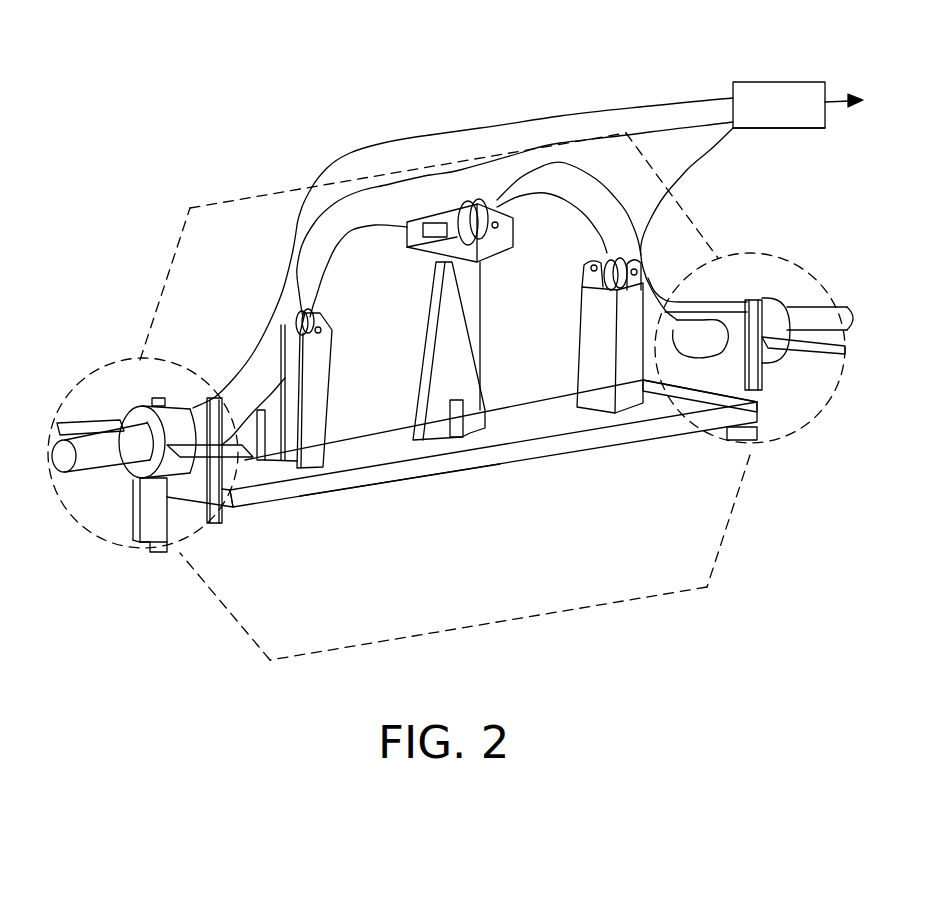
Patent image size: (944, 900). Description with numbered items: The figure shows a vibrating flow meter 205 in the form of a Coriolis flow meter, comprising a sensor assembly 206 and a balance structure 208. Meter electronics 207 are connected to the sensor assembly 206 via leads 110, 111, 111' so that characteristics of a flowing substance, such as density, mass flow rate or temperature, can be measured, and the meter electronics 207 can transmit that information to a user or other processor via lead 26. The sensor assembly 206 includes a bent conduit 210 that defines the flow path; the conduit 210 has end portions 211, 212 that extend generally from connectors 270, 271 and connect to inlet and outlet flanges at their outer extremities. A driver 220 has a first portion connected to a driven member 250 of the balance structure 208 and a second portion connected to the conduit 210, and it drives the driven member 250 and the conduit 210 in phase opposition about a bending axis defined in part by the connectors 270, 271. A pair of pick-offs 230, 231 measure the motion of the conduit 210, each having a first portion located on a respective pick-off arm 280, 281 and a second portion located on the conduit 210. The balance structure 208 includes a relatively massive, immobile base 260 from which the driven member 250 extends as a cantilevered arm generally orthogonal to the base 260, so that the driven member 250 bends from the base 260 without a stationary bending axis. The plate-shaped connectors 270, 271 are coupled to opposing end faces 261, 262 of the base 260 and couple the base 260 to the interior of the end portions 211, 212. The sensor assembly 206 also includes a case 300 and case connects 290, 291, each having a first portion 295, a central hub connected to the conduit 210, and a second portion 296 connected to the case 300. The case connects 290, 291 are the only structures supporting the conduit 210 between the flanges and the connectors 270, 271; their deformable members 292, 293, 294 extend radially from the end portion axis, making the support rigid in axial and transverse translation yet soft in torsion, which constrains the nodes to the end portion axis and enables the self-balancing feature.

The lead 26 is at (844, 117).
The lead 110 is at (515, 174).
The lead 111 is at (581, 89).
The lead 111' is at (719, 224).
The vibrating flow meter 205 is at (754, 68).
The sensor assembly 206 is at (446, 385).
The meter electronics 207 is at (786, 153).
The balance structure 208 is at (400, 546).
The conduit 210 is at (311, 277).
The end portion 211 is at (101, 531).
The end portion 212 is at (807, 274).
The driver 220 is at (437, 252).
The pick-off 230 is at (275, 288).
The pick-off 231 is at (586, 253).
The driven member 250 is at (481, 390).
The base 260 is at (462, 478).
The end face 261 is at (274, 524).
The end face 262 is at (697, 267).
The connector 270 is at (202, 427).
The connector 271 is at (700, 450).
The pick-off arm 280 is at (323, 390).
The pick-off arm 281 is at (568, 336).
The case connect 290 is at (135, 553).
The case connect 291 is at (769, 393).
The deformable member 292 is at (210, 513).
The deformable member 293 is at (160, 589).
The deformable member 294 is at (89, 378).
The first portion / central hub 295 is at (149, 382).
The second portion 296 is at (182, 618).
The case 300 is at (132, 284).